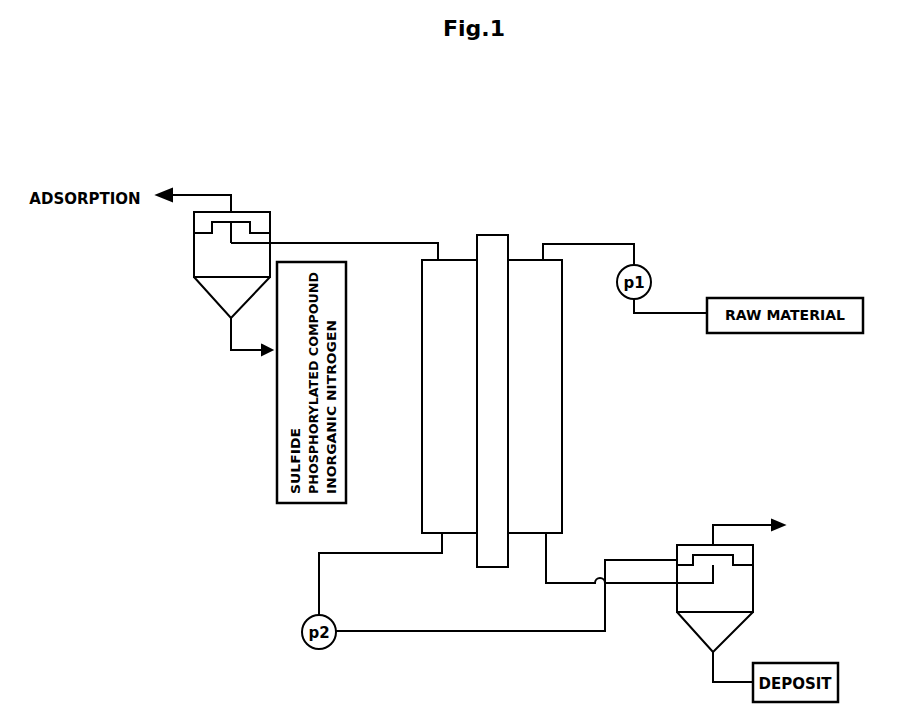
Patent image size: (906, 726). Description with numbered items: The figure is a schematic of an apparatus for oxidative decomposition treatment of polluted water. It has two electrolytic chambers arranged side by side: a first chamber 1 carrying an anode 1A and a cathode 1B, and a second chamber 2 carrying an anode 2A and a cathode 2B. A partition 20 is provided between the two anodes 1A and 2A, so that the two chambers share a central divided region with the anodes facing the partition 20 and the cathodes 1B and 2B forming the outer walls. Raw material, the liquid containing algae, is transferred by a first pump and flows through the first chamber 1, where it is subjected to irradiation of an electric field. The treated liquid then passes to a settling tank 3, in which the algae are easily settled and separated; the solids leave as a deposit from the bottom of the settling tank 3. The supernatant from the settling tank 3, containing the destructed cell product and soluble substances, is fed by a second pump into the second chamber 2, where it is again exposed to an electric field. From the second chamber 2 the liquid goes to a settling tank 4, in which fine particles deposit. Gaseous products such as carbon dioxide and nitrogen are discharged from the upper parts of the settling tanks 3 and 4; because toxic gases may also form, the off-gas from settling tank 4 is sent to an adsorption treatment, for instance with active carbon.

The first chamber 1 is at (547, 404).
The anode 1A is at (510, 313).
The cathode 1B is at (563, 345).
The second chamber 2 is at (436, 458).
The anode 2A is at (478, 293).
The cathode 2B is at (422, 296).
The partition 20 is at (488, 243).
The settling tank 3 is at (754, 590).
The settling tank 4 is at (194, 256).